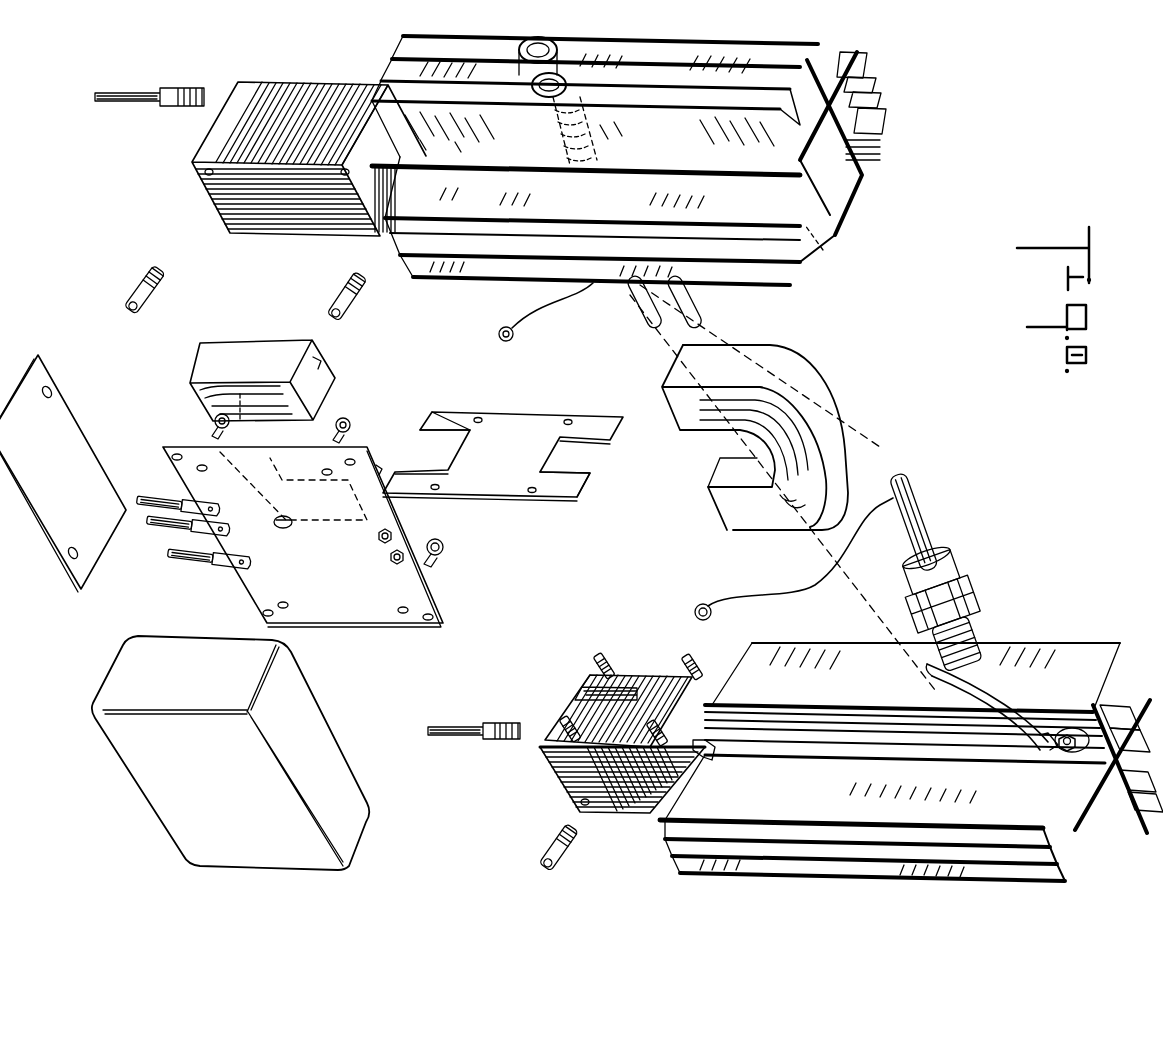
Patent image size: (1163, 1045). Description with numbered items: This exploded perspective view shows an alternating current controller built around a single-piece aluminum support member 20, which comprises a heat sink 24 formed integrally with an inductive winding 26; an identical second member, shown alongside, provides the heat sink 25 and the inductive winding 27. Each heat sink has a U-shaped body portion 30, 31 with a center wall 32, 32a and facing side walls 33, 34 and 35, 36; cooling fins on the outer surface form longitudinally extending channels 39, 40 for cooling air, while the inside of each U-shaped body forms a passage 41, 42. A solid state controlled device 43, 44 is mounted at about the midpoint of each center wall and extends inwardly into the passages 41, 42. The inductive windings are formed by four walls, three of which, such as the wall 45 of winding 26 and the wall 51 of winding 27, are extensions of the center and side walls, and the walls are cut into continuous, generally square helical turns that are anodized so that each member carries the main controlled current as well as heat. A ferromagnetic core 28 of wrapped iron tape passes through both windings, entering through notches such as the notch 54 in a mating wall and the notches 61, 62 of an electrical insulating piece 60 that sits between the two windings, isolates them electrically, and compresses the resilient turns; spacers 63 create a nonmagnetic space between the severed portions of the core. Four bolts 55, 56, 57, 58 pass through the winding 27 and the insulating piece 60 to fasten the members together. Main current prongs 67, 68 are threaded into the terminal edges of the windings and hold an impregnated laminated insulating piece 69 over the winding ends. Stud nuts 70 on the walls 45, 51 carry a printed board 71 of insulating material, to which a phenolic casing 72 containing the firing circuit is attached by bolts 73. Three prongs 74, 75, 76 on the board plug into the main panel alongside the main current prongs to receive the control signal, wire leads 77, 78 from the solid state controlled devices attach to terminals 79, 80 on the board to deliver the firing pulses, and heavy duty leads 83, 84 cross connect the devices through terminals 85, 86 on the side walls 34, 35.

The support member 20 is at (662, 363).
The heat sink 24 is at (867, 77).
The heat sink 25 is at (1128, 778).
The inductive winding 26 is at (295, 131).
The inductive winding 27 is at (886, 741).
The ferromagnetic core 28 is at (233, 347).
The U-shaped body portion 30 is at (857, 137).
The U-shaped body portion 31 is at (1130, 703).
The center wall 32 is at (800, 150).
The center wall 32a is at (1125, 805).
The side wall 33 is at (870, 153).
The side wall 34 is at (833, 210).
The side wall 35 is at (1087, 717).
The side wall 36 is at (1060, 760).
The channel 39 is at (430, 278).
The channel 40 is at (1117, 660).
The passage 41 is at (843, 180).
The passage 42 is at (1110, 807).
The solid state controlled device 43 is at (586, 154).
The solid state controlled device 44 is at (967, 577).
The wall 45 is at (217, 190).
The wall 51 is at (557, 773).
The notch 54 is at (582, 692).
The bolt 55 is at (700, 660).
The bolt 56 is at (667, 728).
The bolt 57 is at (608, 658).
The bolt 58 is at (562, 716).
The electrical insulating piece 60 is at (509, 462).
The notch 61 is at (587, 460).
The notch 62 is at (425, 450).
The spacer 63 is at (322, 357).
The main current prong 67 is at (133, 90).
The main current prong 68 is at (462, 740).
The impregnated laminated insulating piece 69 is at (35, 502).
The stud nut 70 is at (150, 300).
The printed board 71 is at (362, 612).
The phenolic casing 72 is at (120, 680).
The bolt 73 is at (210, 420).
The prong 74 is at (153, 495).
The prong 75 is at (157, 528).
The prong 76 is at (173, 555).
The wire lead 77 is at (567, 300).
The wire lead 78 is at (730, 583).
The terminal 79 is at (377, 538).
The terminal 80 is at (390, 560).
The heavy duty lead 83 is at (643, 297).
The heavy duty lead 84 is at (913, 500).
The terminal 85 is at (823, 250).
The terminal 86 is at (1065, 730).